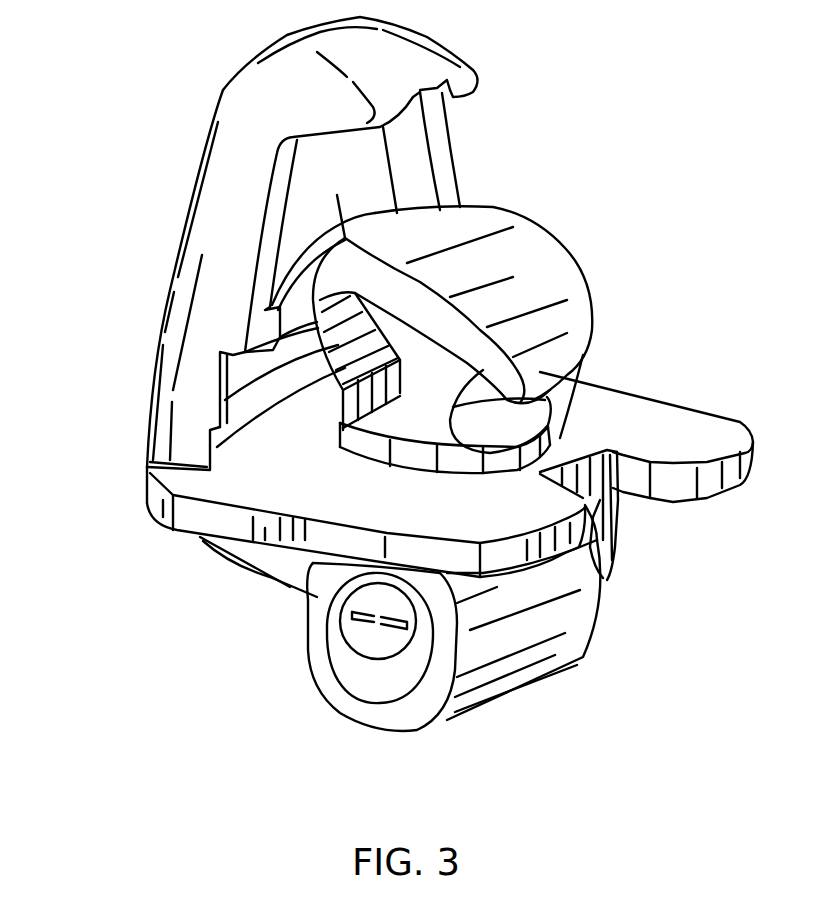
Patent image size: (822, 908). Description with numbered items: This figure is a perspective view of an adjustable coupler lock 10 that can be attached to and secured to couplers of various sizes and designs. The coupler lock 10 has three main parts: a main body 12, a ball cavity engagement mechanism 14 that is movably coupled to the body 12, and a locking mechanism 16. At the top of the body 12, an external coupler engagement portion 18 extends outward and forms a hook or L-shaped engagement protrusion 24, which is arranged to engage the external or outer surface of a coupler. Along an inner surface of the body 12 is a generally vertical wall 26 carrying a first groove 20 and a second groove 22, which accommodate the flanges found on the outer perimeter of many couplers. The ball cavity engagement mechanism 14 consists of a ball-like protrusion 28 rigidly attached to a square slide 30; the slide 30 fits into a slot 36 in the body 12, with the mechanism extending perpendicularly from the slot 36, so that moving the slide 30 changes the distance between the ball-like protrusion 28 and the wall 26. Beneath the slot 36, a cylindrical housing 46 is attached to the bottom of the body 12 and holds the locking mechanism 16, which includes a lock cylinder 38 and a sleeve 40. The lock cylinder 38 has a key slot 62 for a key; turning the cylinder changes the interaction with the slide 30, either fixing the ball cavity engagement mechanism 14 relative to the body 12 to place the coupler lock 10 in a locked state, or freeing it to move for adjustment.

The adjustable coupler lock 10 is at (124, 148).
The main body 12 is at (193, 256).
The ball cavity engagement mechanism 14 is at (610, 322).
The locking mechanism 16 is at (290, 682).
The external coupler engagement portion 18 is at (245, 80).
The first groove 20 is at (212, 445).
The second groove 22 is at (222, 373).
The engagement protrusion 24 is at (410, 73).
The wall 26 is at (360, 172).
The ball-like protrusion 28 is at (555, 270).
The square slide 30 is at (600, 497).
The slot 36 is at (557, 442).
The lock cylinder 38 is at (375, 640).
The sleeve 40 is at (383, 687).
The cylindrical housing 46 is at (552, 640).
The key slot 62 is at (357, 625).